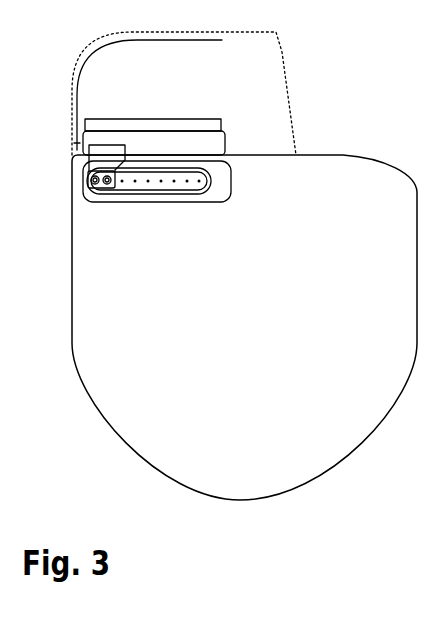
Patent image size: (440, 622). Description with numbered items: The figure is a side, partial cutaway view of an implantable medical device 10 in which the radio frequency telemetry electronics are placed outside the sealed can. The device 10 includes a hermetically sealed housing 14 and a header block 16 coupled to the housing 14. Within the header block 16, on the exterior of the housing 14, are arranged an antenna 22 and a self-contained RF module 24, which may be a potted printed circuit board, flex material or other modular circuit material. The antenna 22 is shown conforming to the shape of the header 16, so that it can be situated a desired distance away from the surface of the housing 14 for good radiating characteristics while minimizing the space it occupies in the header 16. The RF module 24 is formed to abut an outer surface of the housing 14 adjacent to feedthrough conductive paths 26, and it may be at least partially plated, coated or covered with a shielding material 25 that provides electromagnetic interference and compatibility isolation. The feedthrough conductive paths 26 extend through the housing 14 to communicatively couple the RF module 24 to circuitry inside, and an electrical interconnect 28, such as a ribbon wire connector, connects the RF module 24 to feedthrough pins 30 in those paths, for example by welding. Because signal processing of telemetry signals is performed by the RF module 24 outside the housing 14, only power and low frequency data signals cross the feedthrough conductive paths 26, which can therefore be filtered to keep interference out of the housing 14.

The implantable medical device 10 is at (360, 88).
The housing 14 is at (107, 418).
The header block 16 is at (285, 48).
The antenna 22 is at (88, 60).
The RF module 24 is at (225, 135).
The shielding material 25 is at (155, 123).
The feedthrough conductive path 26 is at (123, 192).
The electrical interconnect 28 is at (92, 162).
The feedthrough pin 30 is at (87, 181).